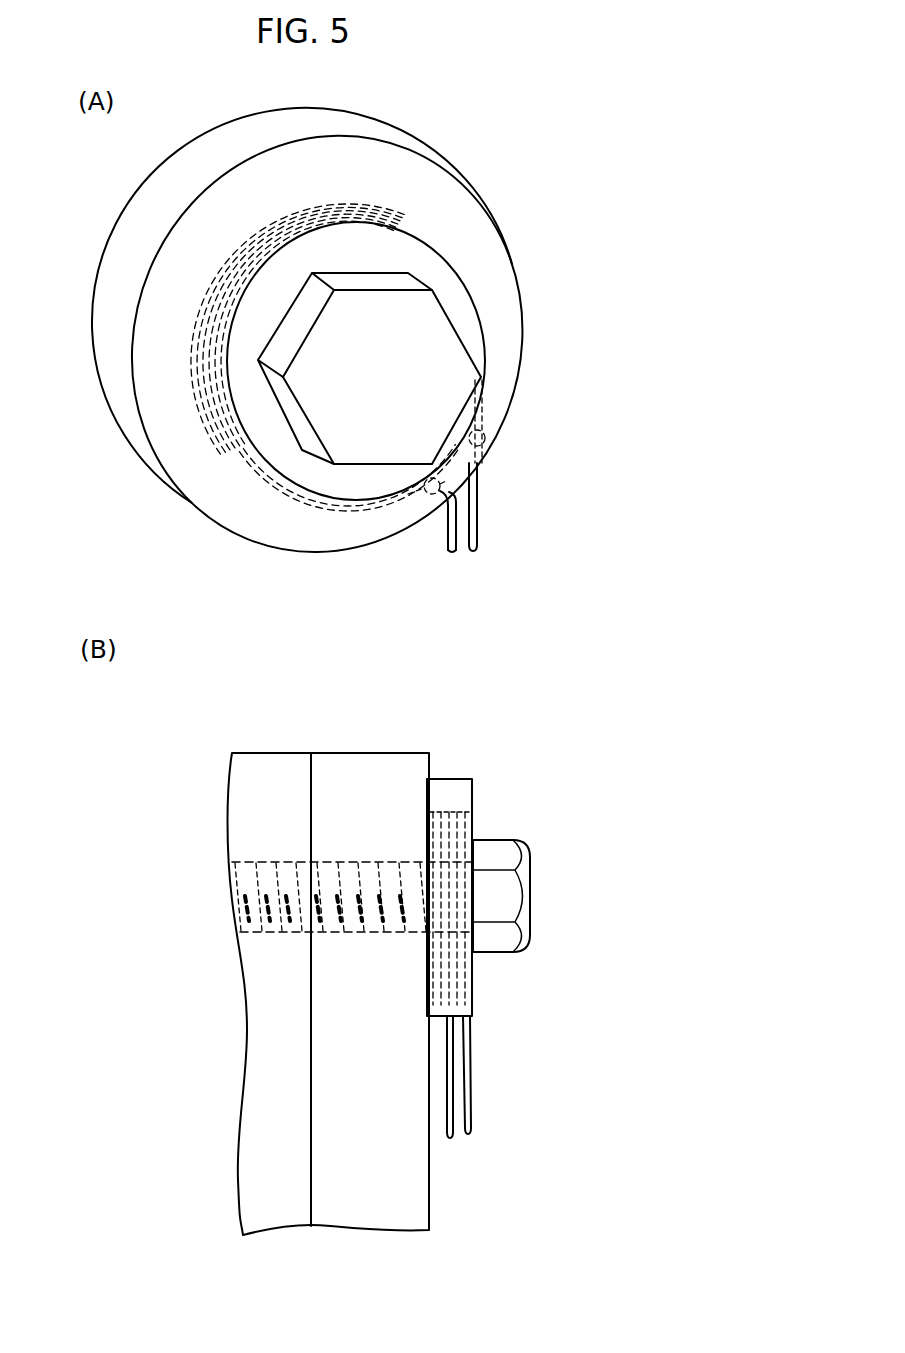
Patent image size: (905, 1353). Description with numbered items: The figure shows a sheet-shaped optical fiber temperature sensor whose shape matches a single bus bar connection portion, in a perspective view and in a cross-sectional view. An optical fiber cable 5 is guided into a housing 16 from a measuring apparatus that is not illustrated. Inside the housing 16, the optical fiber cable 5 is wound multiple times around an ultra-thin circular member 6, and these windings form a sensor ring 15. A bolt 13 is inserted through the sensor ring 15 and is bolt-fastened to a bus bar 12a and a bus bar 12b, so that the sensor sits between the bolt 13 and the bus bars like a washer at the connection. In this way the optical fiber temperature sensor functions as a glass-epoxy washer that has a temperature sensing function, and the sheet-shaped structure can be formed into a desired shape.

The optical fiber cable 5 is at (486, 407).
The ultra-thin circular member 6 is at (430, 263).
The bus bar 12a is at (273, 752).
The bus bar 12b is at (370, 752).
The bolt 13 is at (430, 343).
The sensor ring 15 is at (478, 963).
The housing 16 is at (165, 297).